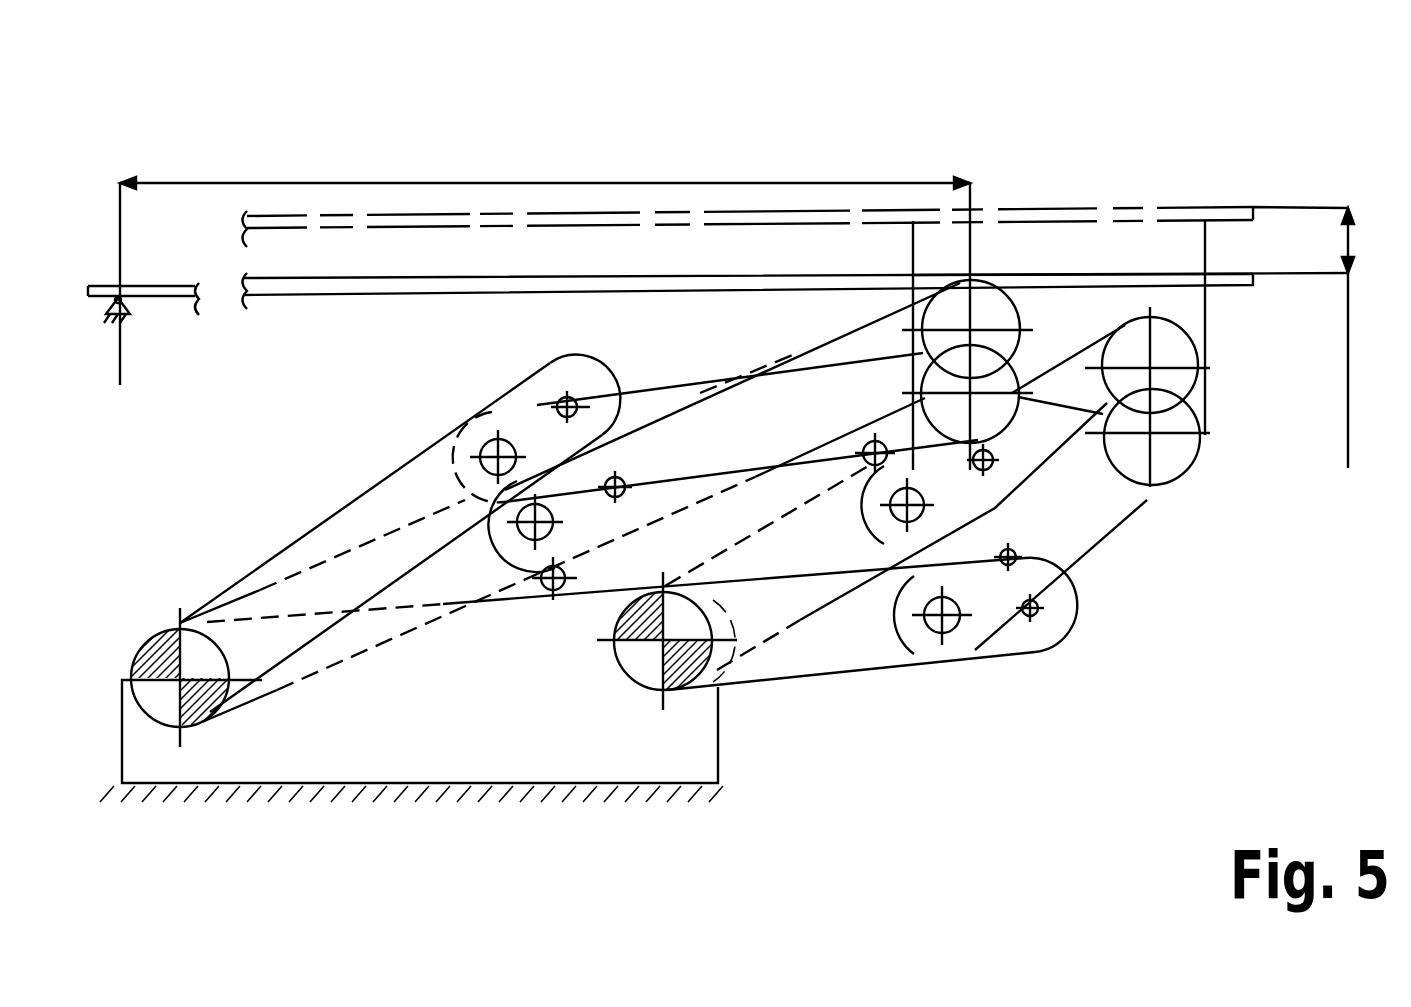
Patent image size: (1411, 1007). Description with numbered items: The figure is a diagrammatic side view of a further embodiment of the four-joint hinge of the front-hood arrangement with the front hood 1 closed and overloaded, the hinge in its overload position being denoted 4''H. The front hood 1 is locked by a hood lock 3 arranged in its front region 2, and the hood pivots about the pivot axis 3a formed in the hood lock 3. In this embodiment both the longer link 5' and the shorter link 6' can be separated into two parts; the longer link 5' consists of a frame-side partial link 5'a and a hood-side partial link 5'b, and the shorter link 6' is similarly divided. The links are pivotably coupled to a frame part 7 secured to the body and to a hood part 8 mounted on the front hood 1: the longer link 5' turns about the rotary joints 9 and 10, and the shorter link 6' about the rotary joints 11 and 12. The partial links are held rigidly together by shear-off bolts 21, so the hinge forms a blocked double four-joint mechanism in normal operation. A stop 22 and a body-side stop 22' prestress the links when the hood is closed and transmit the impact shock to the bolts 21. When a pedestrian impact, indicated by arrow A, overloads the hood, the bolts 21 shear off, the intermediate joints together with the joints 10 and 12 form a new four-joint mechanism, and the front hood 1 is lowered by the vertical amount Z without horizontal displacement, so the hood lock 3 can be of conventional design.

The front hood 1 is at (490, 228).
The front region of the front hood 2 is at (176, 297).
The hood lock 3 is at (117, 304).
The pivot axis of the hood lock 3a is at (128, 292).
The longer link 5' is at (467, 538).
The frame-side partial link of the longer link 5'a is at (322, 538).
The hood-side partial link of the longer link 5'b is at (715, 392).
The shorter link 6' is at (642, 607).
The frame part 7 is at (535, 762).
The hood part 8 is at (1122, 325).
The rotary joint of the longer link 9 is at (157, 707).
The rotary joint of the longer link 10 is at (1015, 368).
The rotary joint of the shorter link 11 is at (647, 663).
The rotary joint of the shorter link 12 is at (1165, 357).
The shear-off bolt 21 is at (617, 485).
The stop 22 is at (818, 497).
The stop 22' is at (545, 614).
The arrow A is at (1037, 193).
The vertical component Z is at (1324, 338).
The four-joint hinge in overload position 4''H is at (1104, 700).